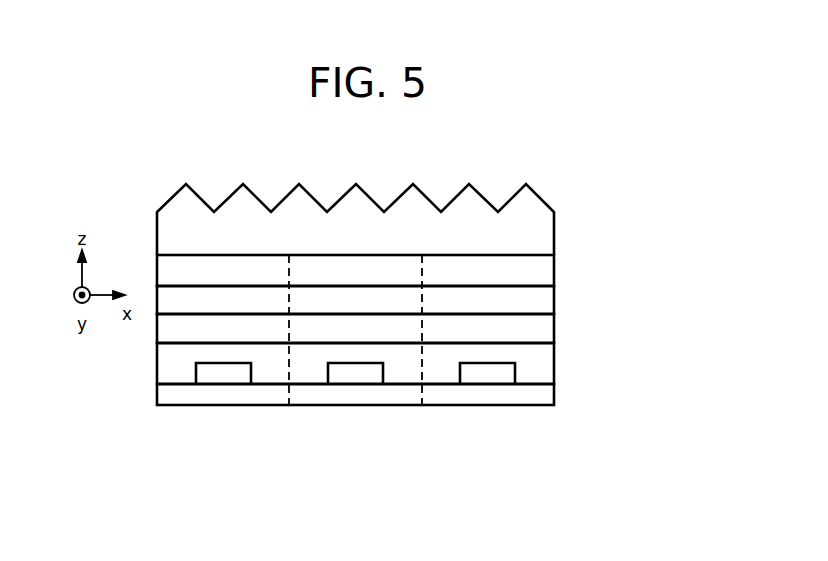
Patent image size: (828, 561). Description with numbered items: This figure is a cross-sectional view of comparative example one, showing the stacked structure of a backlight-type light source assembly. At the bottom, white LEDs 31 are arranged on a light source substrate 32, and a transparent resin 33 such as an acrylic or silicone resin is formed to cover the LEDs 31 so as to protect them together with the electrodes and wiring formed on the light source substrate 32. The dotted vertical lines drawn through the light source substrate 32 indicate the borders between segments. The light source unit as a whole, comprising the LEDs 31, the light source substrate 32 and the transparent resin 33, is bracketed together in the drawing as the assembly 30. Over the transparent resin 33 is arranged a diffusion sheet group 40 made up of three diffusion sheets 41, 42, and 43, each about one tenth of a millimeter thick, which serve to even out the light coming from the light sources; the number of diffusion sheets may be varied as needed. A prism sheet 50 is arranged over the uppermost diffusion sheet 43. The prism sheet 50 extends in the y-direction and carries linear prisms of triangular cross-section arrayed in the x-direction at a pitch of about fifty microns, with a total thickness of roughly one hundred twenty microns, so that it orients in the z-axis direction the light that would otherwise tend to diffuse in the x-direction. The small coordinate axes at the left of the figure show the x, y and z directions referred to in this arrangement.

The prism sheet 50 is at (532, 234).
The diffusion sheet group 40 is at (413, 301).
The diffusion sheet 43 is at (532, 274).
The diffusion sheet 42 is at (532, 304).
The diffusion sheet 41 is at (386, 328).
The light emitting element group 30 is at (355, 434).
The LEDs 31 is at (226, 373).
The light source substrate 32 is at (359, 400).
The transparent resin 33 is at (475, 411).